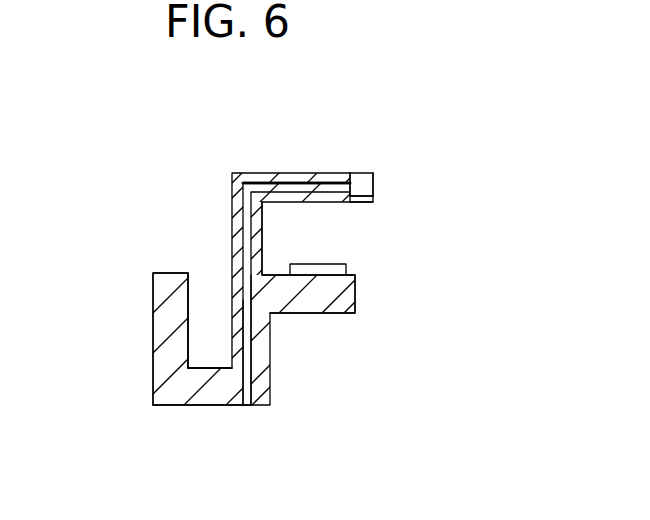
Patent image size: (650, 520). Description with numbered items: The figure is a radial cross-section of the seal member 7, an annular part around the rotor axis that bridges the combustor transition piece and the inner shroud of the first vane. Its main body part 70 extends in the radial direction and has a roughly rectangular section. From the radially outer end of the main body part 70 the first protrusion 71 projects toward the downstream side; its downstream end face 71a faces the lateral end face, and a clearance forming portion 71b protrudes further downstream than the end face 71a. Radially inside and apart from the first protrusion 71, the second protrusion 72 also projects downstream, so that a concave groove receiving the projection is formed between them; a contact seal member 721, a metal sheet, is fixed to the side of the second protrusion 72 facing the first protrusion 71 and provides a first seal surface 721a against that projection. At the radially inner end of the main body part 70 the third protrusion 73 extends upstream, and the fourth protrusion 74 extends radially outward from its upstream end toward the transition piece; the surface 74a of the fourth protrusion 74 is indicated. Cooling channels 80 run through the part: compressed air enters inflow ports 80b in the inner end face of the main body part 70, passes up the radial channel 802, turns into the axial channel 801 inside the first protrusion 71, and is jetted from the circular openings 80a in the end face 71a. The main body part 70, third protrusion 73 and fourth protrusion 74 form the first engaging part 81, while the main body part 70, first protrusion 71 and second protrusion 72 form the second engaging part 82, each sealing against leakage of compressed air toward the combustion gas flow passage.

The seal member 7 is at (165, 412).
The main body part 70 is at (238, 212).
The first protrusion 71 is at (315, 176).
The end face 71a is at (353, 196).
The clearance forming portion 71b is at (367, 185).
The second protrusion 72 is at (338, 303).
The contact seal member 721 is at (355, 277).
The first seal surface 721a is at (334, 264).
The third protrusion 73 is at (212, 395).
The fourth protrusion 74 is at (160, 343).
The inner surface of side wall 74a is at (190, 311).
The cooling channel 80 is at (313, 280).
The axial channel 801 is at (272, 184).
The radial channel 802 is at (244, 373).
The opening 80a is at (360, 184).
The inflow port 80b is at (248, 402).
The first engaging part 81 is at (207, 368).
The second engaging part 82 is at (264, 233).